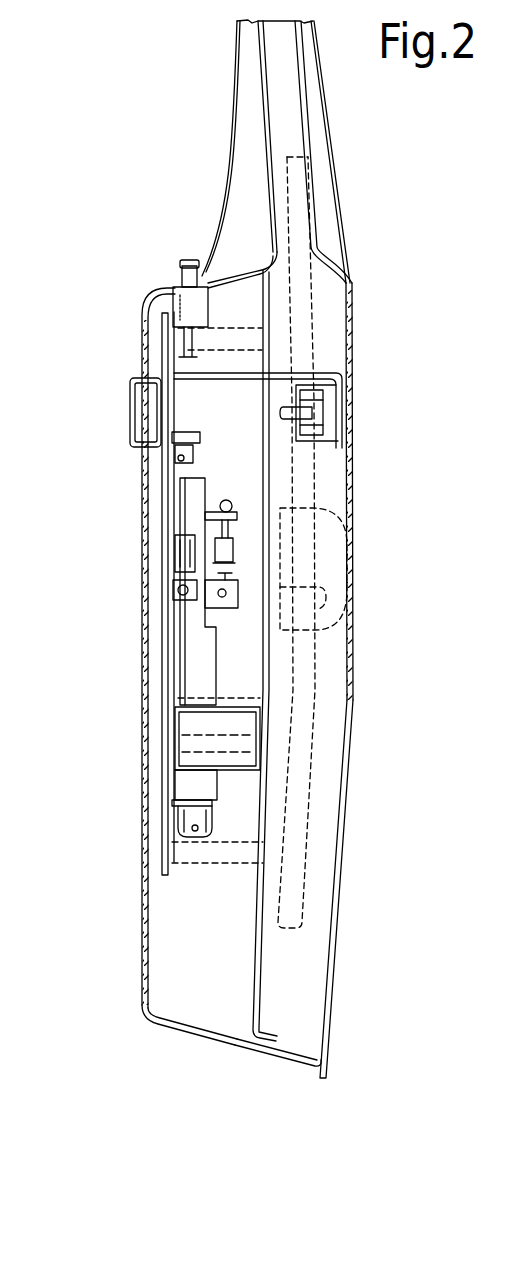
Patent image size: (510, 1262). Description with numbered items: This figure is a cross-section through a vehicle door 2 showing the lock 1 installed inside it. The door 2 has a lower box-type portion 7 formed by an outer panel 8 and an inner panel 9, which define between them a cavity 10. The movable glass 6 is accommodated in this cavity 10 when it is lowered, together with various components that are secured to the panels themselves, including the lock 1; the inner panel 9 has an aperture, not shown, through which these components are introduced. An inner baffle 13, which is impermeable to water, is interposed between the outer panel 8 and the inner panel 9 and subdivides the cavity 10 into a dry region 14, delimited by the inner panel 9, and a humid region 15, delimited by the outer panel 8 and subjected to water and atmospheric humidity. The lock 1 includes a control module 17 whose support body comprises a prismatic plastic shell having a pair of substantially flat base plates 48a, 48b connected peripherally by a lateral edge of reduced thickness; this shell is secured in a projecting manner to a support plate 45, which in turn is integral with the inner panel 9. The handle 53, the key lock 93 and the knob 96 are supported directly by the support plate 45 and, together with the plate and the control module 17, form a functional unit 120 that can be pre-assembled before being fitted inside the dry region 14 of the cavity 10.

The lock 1 is at (197, 666).
The door 2 is at (348, 261).
The glass 6 is at (292, 903).
The lower box-type portion 7 is at (335, 985).
The outer panel 8 is at (353, 705).
The inner panel 9 is at (145, 718).
The cavity 10 is at (193, 910).
The inner baffle 13 is at (250, 978).
The dry region 14 is at (185, 970).
The humid region 15 is at (290, 987).
The control module 17 is at (180, 502).
The support plate 45 is at (175, 762).
The base plate 48a is at (164, 780).
The base plate 48b is at (224, 669).
The handle 53 is at (132, 410).
The key lock 93 is at (330, 417).
The knob 96 is at (172, 287).
The functional unit 120 is at (156, 562).